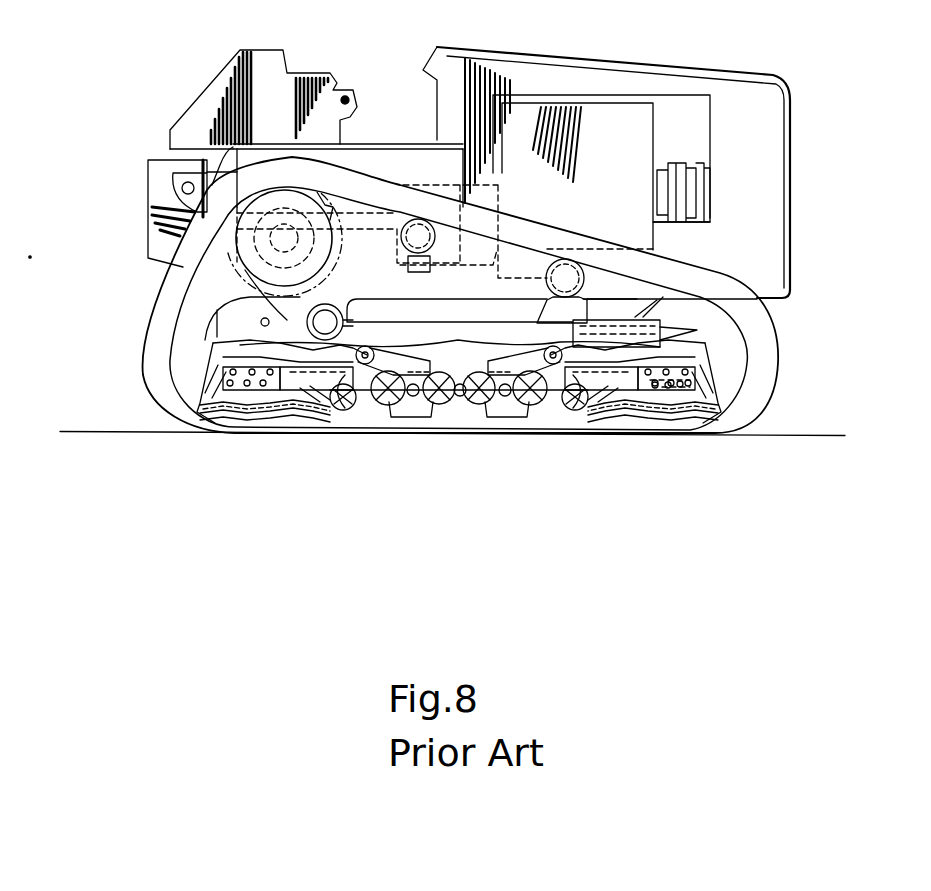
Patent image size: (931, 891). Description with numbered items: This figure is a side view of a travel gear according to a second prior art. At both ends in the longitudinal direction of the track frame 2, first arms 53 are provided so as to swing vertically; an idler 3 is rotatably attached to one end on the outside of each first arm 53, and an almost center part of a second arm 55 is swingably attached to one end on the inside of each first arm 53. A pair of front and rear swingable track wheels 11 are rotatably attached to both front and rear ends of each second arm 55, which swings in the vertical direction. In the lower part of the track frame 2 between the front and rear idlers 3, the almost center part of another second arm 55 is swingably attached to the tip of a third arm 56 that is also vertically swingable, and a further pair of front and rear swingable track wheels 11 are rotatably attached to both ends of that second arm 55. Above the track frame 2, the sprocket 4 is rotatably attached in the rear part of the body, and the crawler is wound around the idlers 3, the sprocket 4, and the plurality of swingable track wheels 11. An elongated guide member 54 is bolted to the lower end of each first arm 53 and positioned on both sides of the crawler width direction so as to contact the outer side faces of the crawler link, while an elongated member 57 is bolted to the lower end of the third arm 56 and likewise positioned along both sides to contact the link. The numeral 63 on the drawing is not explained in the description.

The track frame 2 is at (385, 333).
The idler 3 is at (190, 352).
The sprocket 4 is at (237, 244).
The swingable track wheel 11 is at (343, 407).
The first arm 53 is at (705, 365).
The guide member 54 is at (237, 430).
The second arm 55 is at (363, 413).
The third arm 56 is at (395, 362).
The elongated member 57 is at (437, 407).
The idler support frame (rear) 63 is at (205, 381).